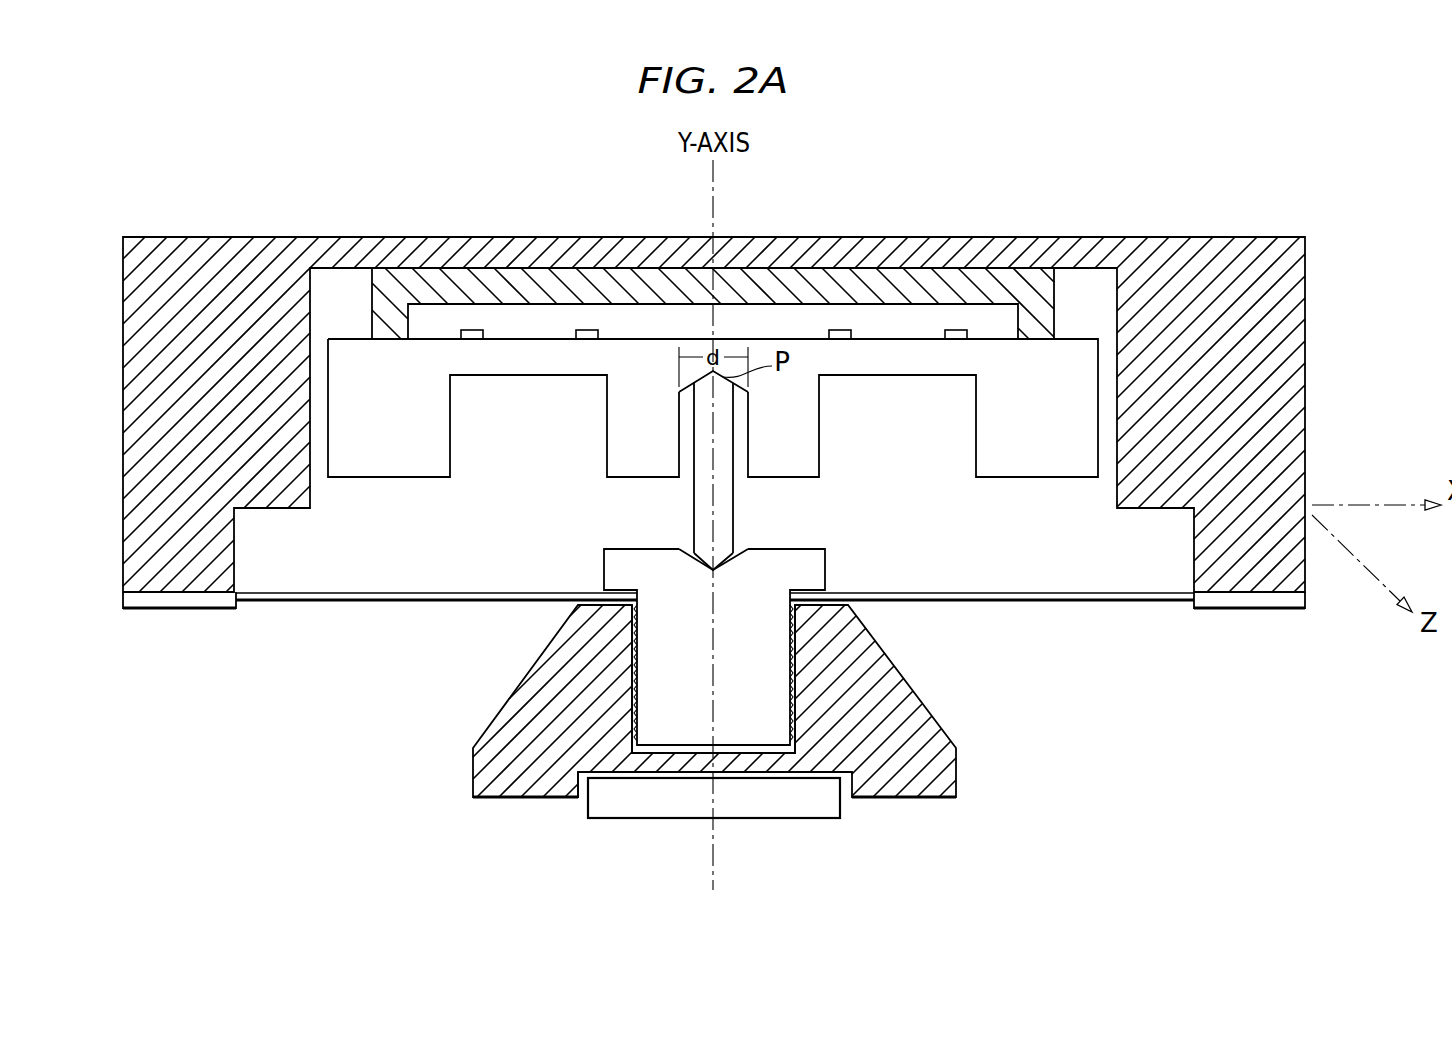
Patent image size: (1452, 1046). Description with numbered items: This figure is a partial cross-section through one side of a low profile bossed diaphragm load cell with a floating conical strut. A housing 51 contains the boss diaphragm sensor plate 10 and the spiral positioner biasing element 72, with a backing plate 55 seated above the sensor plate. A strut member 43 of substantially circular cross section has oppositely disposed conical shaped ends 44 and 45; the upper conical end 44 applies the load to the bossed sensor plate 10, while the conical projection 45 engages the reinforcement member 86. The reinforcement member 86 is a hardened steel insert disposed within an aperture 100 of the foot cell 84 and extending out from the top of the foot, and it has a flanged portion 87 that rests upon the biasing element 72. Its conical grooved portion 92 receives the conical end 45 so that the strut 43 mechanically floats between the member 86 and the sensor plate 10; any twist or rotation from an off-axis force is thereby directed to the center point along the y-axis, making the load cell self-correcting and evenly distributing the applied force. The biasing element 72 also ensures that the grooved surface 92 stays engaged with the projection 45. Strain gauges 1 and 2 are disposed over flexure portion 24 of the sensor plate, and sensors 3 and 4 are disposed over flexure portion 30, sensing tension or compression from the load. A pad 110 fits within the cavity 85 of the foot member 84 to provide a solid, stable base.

The strain gauge 1 is at (472, 330).
The strain gauge 2 is at (587, 330).
The sensor 3 is at (840, 330).
The sensor 4 is at (957, 330).
The boss diaphragm sensor plate 10 is at (496, 350).
The flexure portion 24 is at (525, 362).
The flexure portion 30 is at (883, 355).
The strut member 43 is at (752, 523).
The conical shaped end 44 is at (705, 378).
The conical projection 45 is at (705, 562).
The housing 51 is at (1305, 413).
The backing plate 55 is at (1058, 280).
The spiral positioner biasing element 72 is at (1174, 598).
The foot cell 84 is at (920, 722).
The cavity 85 is at (583, 790).
The reinforcement member 86 is at (762, 727).
The flanged portion 87 is at (610, 568).
The conical grooved portion 92 is at (728, 565).
The aperture 100 is at (636, 637).
The pad 110 is at (822, 805).